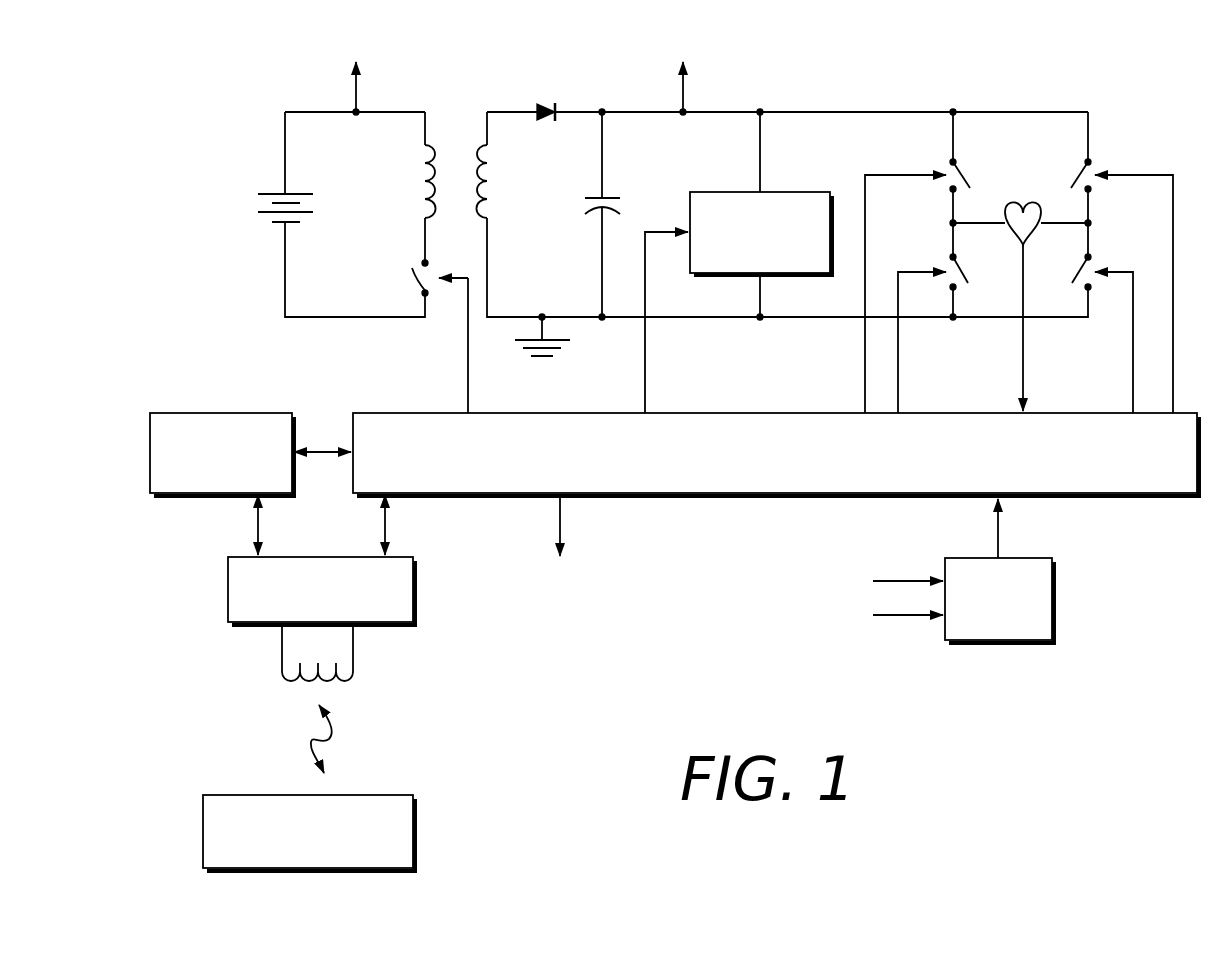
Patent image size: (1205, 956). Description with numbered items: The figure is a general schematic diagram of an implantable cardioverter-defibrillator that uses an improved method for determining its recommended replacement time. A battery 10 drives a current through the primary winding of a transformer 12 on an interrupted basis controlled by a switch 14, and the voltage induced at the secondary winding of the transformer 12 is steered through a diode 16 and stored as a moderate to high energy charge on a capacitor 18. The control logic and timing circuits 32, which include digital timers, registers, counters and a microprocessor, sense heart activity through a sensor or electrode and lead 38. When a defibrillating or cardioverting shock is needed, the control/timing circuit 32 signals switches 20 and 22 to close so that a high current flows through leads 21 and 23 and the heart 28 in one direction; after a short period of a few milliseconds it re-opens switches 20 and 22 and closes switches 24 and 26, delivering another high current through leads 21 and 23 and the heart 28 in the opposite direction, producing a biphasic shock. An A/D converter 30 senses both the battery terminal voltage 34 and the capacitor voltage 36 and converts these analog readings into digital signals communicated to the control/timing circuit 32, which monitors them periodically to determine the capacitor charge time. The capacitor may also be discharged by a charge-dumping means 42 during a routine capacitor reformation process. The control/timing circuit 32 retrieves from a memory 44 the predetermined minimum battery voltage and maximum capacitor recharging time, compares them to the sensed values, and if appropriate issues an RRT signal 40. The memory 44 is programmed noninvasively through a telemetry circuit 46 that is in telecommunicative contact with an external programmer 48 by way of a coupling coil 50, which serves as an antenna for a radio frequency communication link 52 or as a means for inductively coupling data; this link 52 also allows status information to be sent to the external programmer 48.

The battery 10 is at (283, 192).
The transformer 12 is at (487, 104).
The switch 14 is at (418, 283).
The diode 16 is at (553, 103).
The capacitor 18 is at (608, 195).
The switch 20 is at (966, 181).
The lead 21 is at (980, 224).
The switch 22 is at (1072, 275).
The lead 23 is at (1070, 224).
The switch 24 is at (1076, 181).
The switch 26 is at (970, 272).
The heart 28 is at (1010, 206).
The A/D converter 30 is at (1055, 603).
The control logic and timing circuits 32 is at (543, 413).
The battery terminal voltage 34 is at (354, 100).
The capacitor voltage 36 is at (680, 100).
The lead 38 is at (1025, 366).
The RRT signal 40 is at (557, 538).
The charge-dumping means 42 is at (788, 190).
The memory 44 is at (221, 413).
The telemetry circuit 46 is at (416, 598).
The external programmer 48 is at (416, 835).
The coupling coil 50 is at (355, 655).
The communication link 52 is at (333, 740).